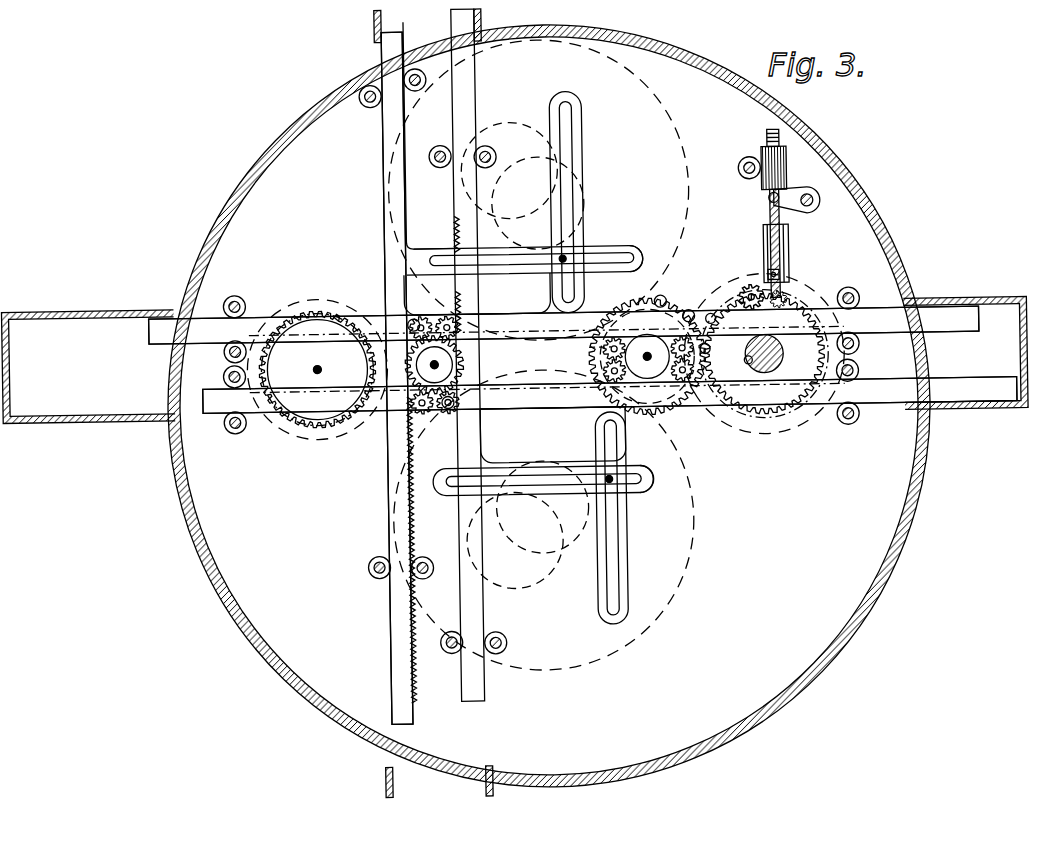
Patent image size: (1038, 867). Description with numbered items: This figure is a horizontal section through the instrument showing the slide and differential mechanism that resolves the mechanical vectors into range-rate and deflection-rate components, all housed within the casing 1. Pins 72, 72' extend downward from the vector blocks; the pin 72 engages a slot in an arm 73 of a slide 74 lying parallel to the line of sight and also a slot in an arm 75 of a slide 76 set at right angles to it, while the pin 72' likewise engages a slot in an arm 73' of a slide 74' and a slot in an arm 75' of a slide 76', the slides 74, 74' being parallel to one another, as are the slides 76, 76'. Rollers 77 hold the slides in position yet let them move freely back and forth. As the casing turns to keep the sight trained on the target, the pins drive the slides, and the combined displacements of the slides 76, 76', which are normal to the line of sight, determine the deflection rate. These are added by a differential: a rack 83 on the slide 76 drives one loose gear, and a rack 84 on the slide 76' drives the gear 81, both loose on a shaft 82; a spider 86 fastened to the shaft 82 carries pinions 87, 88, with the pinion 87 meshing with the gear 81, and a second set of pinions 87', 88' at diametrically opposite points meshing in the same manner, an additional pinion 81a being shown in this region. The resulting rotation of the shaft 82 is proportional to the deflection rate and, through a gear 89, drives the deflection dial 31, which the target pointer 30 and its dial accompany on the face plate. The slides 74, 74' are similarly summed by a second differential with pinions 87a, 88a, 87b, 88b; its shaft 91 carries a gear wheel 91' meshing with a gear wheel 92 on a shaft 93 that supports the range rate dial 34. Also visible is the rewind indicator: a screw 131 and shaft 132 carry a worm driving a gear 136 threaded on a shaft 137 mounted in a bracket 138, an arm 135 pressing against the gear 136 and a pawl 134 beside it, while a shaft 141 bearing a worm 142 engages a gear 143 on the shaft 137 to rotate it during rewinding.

The casing 1 is at (862, 624).
The pointer 30 is at (434, 364).
The deflection dial 31 is at (786, 425).
The range rate dial 34 is at (333, 436).
The pin 72 is at (525, 239).
The pin 72' is at (558, 498).
The arm 73 is at (648, 246).
The arm 73' is at (686, 480).
The slide 74 is at (376, 378).
The slide 74' is at (430, 135).
The arm 75 is at (588, 201).
The arm 75' is at (636, 518).
The slide 76 is at (564, 307).
The slide 76' is at (610, 382).
The rollers 77 is at (272, 298).
The gear 81 is at (688, 313).
The pinion 81a is at (590, 348).
The shaft 82 is at (652, 368).
The rack 83 is at (412, 492).
The rack 84 is at (470, 423).
The spider 86 is at (712, 316).
The pinion 87 is at (620, 348).
The pinion 87' is at (724, 350).
The pinion 87a is at (455, 425).
The pinion 87b is at (448, 314).
The pinion 88 is at (621, 373).
The pinion 88' is at (734, 371).
The pinion 88a is at (428, 411).
The pinion 88b is at (466, 296).
The gear 89 is at (612, 400).
The shaft 91 is at (344, 370).
The gear wheel 91' is at (508, 299).
The gear wheel 92 is at (340, 310).
The shaft 93 is at (318, 360).
The screw 131 is at (750, 178).
The shaft 132 is at (751, 158).
The pawl 134 is at (812, 208).
The arm 135 is at (804, 194).
The gear 136 is at (790, 153).
The shaft 137 is at (771, 243).
The bracket 138 is at (790, 246).
The shaft 141 is at (752, 290).
The worm 142 is at (740, 290).
The gear 143 is at (790, 296).